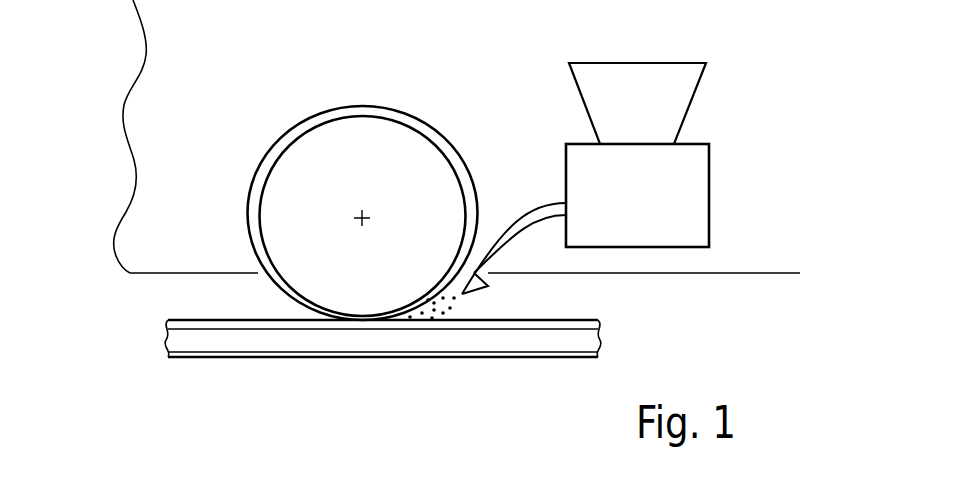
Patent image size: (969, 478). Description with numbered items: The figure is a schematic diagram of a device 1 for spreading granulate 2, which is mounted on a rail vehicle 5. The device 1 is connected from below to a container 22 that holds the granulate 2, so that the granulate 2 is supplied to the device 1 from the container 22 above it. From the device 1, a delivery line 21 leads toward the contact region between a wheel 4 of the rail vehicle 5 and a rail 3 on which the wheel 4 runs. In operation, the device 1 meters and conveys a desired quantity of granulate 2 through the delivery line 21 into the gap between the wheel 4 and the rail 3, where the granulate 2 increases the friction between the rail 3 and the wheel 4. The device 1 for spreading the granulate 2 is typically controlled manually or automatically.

The device for spreading granulate 1 is at (657, 196).
The delivery line 21 is at (538, 214).
The container 22 is at (656, 99).
The granulate 2 is at (432, 306).
The rail 3 is at (270, 343).
The wheel 4 is at (320, 185).
The rail vehicle 5 is at (200, 46).